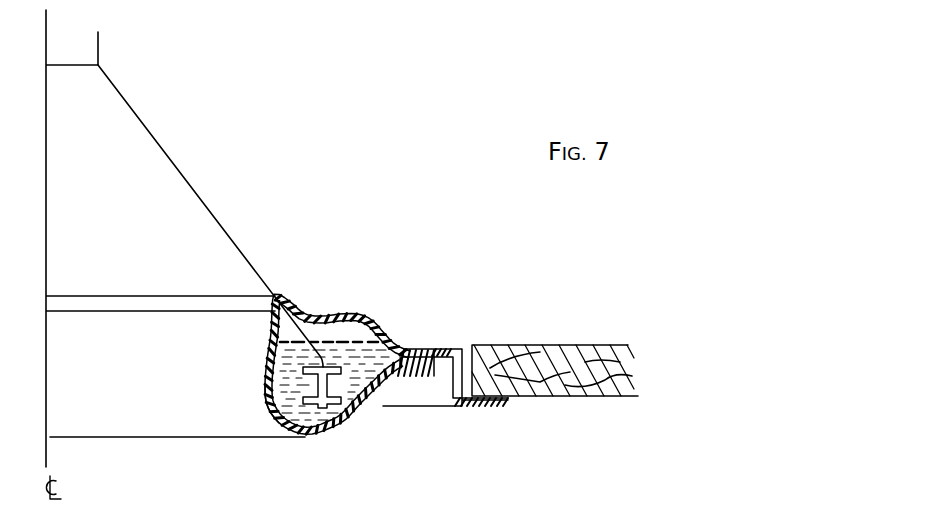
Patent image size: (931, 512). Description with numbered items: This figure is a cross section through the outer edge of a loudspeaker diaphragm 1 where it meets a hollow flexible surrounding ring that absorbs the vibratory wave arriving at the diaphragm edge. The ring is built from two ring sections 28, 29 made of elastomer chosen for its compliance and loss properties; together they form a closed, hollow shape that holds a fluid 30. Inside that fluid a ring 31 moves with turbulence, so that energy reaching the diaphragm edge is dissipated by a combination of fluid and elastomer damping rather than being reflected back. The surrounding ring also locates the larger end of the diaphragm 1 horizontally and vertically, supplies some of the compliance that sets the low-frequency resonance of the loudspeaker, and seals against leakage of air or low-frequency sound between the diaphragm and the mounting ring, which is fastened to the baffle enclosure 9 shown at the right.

The tank wall 1 is at (178, 167).
The baffle enclosure 9 is at (581, 345).
The ring section 28 is at (355, 313).
The ring section 29 is at (267, 412).
The fluid 30 is at (359, 387).
The ring 31 is at (303, 399).